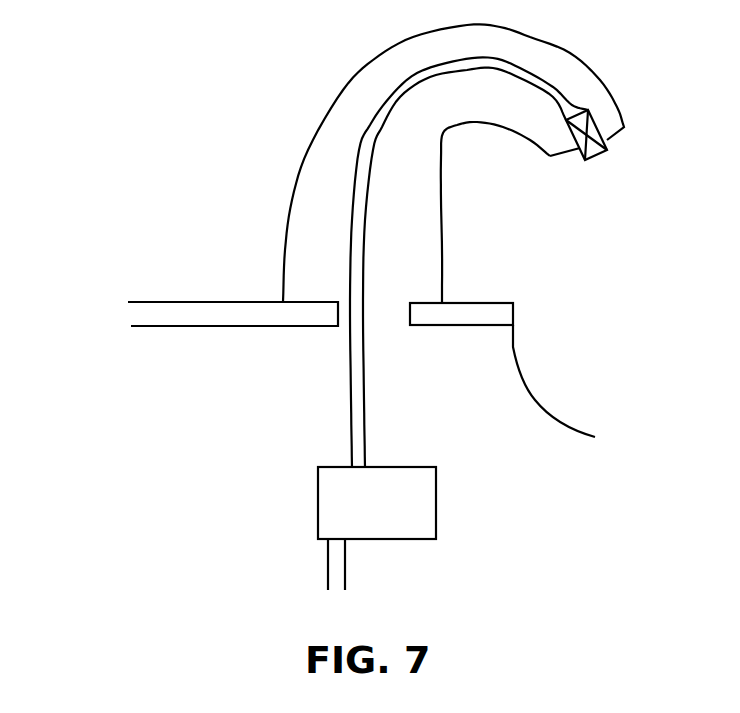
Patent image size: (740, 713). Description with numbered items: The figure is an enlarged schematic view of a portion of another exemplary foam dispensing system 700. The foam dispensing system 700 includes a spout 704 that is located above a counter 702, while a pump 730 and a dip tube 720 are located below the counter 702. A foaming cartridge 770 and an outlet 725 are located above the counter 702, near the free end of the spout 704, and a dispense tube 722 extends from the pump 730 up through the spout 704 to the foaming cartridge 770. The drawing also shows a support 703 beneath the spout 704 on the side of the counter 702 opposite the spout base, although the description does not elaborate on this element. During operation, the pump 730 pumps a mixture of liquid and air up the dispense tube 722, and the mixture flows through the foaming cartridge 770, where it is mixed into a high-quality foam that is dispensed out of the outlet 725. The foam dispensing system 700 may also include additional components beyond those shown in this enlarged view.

The foam dispensing system 700 is at (95, 231).
The counter 702 is at (248, 300).
The basin support 703 is at (528, 388).
The spout 704 is at (373, 62).
The dip tube 720 is at (345, 575).
The dispense tube 722 is at (388, 97).
The outlet 725 is at (598, 157).
The pump 730 is at (433, 508).
The foaming cartridge 770 is at (595, 132).